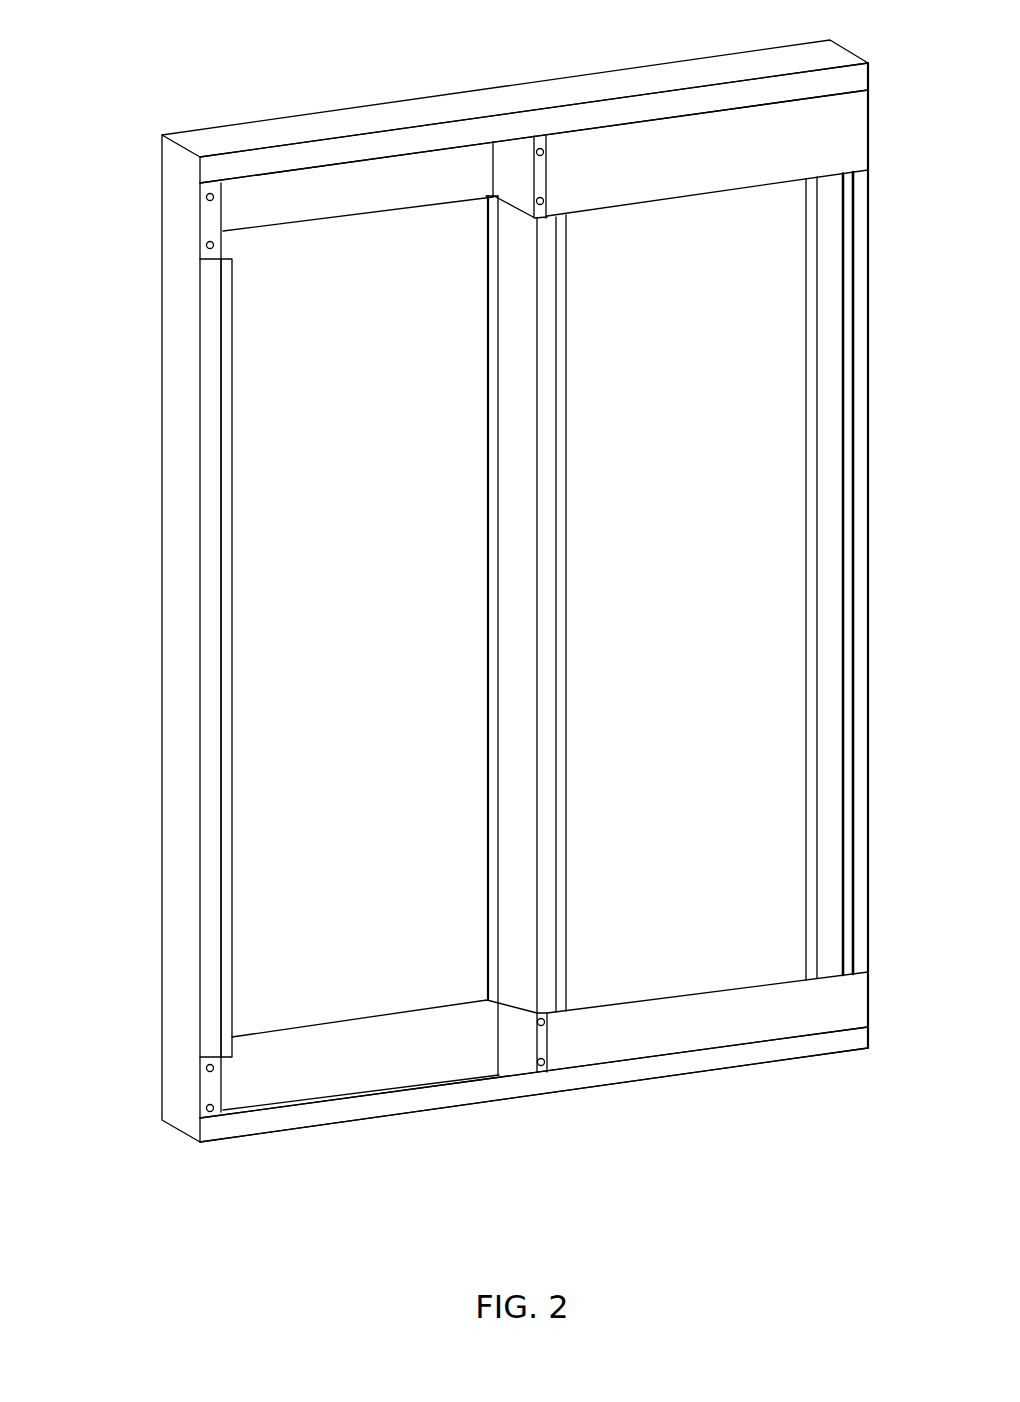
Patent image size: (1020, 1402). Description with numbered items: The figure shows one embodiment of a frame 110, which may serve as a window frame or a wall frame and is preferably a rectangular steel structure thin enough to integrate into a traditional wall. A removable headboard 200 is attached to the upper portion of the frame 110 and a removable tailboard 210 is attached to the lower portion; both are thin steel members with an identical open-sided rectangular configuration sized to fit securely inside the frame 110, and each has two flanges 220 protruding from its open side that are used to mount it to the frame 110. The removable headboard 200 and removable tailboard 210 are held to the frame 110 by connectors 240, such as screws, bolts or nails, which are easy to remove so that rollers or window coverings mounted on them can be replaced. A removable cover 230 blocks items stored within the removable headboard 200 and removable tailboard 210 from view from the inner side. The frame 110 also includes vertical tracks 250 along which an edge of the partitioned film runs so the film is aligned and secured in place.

The frame 110 is at (170, 593).
The removable headboard 200 is at (337, 172).
The removable tailboard 210 is at (352, 1082).
The flanges 220 is at (542, 137).
The removable cover 230 is at (720, 173).
The connectors 240 is at (208, 246).
The vertical tracks 250 is at (487, 318).